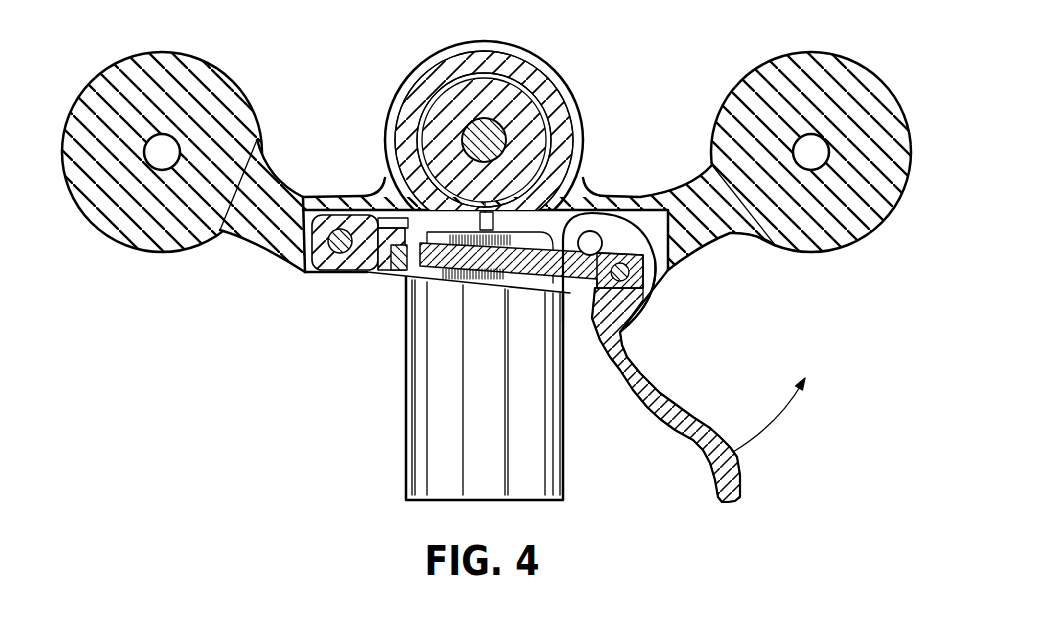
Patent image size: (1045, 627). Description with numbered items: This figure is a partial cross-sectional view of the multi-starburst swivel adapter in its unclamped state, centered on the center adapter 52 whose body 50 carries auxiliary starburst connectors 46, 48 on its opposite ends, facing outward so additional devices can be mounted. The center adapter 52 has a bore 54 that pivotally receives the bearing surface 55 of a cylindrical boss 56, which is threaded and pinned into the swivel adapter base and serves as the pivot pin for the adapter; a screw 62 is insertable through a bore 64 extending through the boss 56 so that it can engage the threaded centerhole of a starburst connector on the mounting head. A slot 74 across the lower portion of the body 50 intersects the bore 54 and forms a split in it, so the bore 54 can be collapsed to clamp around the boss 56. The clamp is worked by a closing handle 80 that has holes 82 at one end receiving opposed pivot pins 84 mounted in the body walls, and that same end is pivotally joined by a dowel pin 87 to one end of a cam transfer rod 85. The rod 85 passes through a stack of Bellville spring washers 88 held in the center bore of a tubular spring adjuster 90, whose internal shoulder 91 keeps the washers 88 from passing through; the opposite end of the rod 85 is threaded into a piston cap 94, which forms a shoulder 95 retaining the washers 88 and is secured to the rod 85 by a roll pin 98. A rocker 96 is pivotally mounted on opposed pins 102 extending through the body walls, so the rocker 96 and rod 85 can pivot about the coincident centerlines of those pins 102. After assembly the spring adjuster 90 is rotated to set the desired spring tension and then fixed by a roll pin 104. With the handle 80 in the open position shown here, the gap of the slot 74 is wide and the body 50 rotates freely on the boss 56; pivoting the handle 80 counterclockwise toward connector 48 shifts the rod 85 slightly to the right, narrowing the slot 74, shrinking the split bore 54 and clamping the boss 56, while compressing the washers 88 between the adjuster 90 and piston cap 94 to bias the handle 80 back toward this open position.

The auxiliary starburst connector 46 is at (98, 80).
The auxiliary starburst connector 48 is at (876, 82).
The body 50 is at (712, 246).
The center adapter 52 is at (492, 43).
The bore 54 is at (549, 130).
The bearing surface 55 is at (549, 92).
The cylindrical boss 56 is at (513, 93).
The screw 62 is at (423, 88).
The bore 64 is at (506, 118).
The slot 74 is at (484, 211).
The closing handle 80 is at (690, 420).
The holes 82 is at (591, 231).
The pivot pins 84 is at (602, 241).
The cam transfer rod 85 is at (572, 284).
The dowel pin 87 is at (650, 292).
The Bellville spring washers 88 is at (484, 283).
The tubular spring adjuster 90 is at (514, 288).
The internal shoulder 91 is at (510, 232).
The piston cap 94 is at (405, 281).
The shoulder 95 is at (447, 283).
The rocker 96 is at (302, 264).
The roll pin 98 is at (417, 223).
The pins 102 is at (327, 239).
The roll pin 104 is at (348, 273).